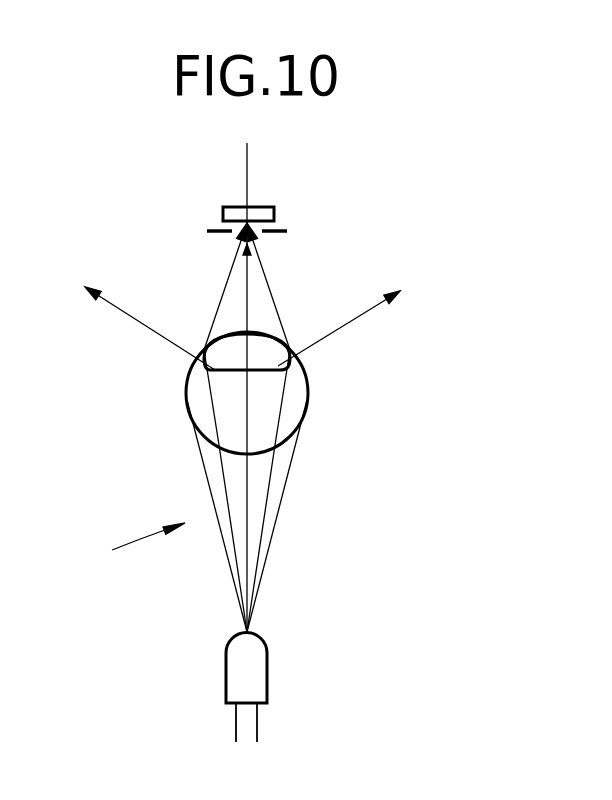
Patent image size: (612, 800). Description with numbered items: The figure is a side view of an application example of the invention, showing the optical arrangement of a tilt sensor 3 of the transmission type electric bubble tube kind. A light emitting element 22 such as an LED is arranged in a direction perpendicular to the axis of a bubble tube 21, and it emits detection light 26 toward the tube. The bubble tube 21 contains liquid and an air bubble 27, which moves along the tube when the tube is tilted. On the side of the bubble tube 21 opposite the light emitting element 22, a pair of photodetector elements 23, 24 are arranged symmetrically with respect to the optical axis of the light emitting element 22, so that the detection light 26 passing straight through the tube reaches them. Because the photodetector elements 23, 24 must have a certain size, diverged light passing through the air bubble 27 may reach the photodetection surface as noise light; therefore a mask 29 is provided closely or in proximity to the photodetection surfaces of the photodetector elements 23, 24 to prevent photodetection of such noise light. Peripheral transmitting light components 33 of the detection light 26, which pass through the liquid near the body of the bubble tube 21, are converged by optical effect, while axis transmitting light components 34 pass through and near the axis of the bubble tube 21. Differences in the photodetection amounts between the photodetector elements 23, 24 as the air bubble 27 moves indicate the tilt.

The tilt sensor 3 is at (136, 548).
The bubble tube 21 is at (308, 383).
The light emitting element 22 is at (252, 668).
The photodetector element 23 is at (309, 172).
The photodetector element 24 is at (250, 207).
The detection light 26 is at (277, 531).
The air bubble 27 is at (228, 358).
The mask 29 is at (273, 235).
The peripheral transmitting light components 33 is at (220, 289).
The axis transmitting light components 34 is at (247, 415).